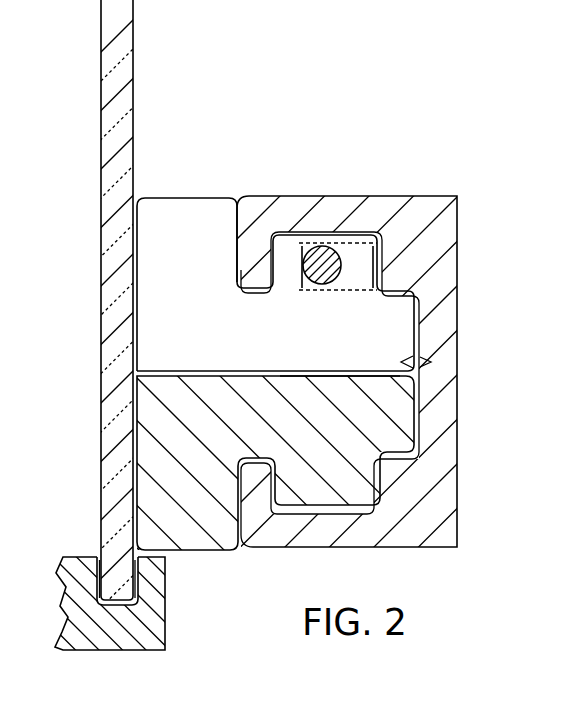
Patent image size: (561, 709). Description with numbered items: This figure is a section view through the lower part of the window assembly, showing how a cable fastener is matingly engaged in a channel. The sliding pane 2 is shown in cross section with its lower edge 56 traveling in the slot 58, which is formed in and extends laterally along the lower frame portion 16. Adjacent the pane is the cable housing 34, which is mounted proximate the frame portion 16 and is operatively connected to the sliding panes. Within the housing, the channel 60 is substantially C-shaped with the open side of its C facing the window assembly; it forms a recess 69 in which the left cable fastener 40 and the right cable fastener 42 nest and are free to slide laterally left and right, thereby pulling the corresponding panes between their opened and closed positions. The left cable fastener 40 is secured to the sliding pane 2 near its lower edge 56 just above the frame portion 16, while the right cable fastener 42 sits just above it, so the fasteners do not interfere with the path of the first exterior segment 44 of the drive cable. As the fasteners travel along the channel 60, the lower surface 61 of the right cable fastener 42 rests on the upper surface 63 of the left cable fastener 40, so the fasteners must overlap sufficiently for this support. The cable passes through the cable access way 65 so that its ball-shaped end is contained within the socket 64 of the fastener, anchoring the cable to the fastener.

The sliding pane 2 is at (134, 66).
The cable housing 34 is at (373, 153).
The left cable fastener 40 is at (405, 418).
The right cable fastener 42 is at (172, 200).
The first exterior segment 44 is at (310, 268).
The lower edge 56 is at (118, 607).
The slot 58 is at (99, 556).
The channel 60 is at (450, 283).
The lower surface 61 is at (342, 373).
The upper surface 63 is at (160, 371).
The socket 64 is at (328, 243).
The cable access way 65 is at (358, 278).
The recess 69 is at (400, 362).
The lower frame portion 16 is at (160, 637).